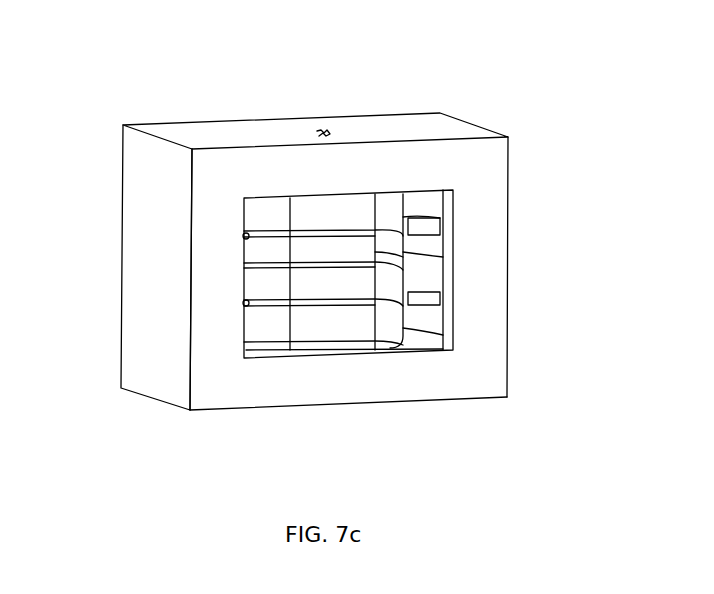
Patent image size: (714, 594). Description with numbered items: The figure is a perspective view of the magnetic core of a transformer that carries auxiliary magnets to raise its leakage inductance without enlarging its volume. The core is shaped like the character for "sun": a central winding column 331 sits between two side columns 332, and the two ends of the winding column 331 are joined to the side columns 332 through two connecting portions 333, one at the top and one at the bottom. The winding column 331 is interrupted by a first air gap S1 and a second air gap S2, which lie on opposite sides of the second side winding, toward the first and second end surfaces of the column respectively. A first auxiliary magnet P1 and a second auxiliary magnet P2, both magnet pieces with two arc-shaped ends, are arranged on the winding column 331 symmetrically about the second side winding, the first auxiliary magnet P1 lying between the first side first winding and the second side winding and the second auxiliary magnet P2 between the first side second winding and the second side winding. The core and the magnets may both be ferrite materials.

The winding column 331 is at (407, 330).
The side column 332 is at (206, 311).
The connecting portion 333 is at (397, 165).
The first air gap S1 is at (330, 230).
The second air gap S2 is at (338, 300).
The first auxiliary magnet P1 is at (248, 238).
The second auxiliary magnet P2 is at (415, 285).